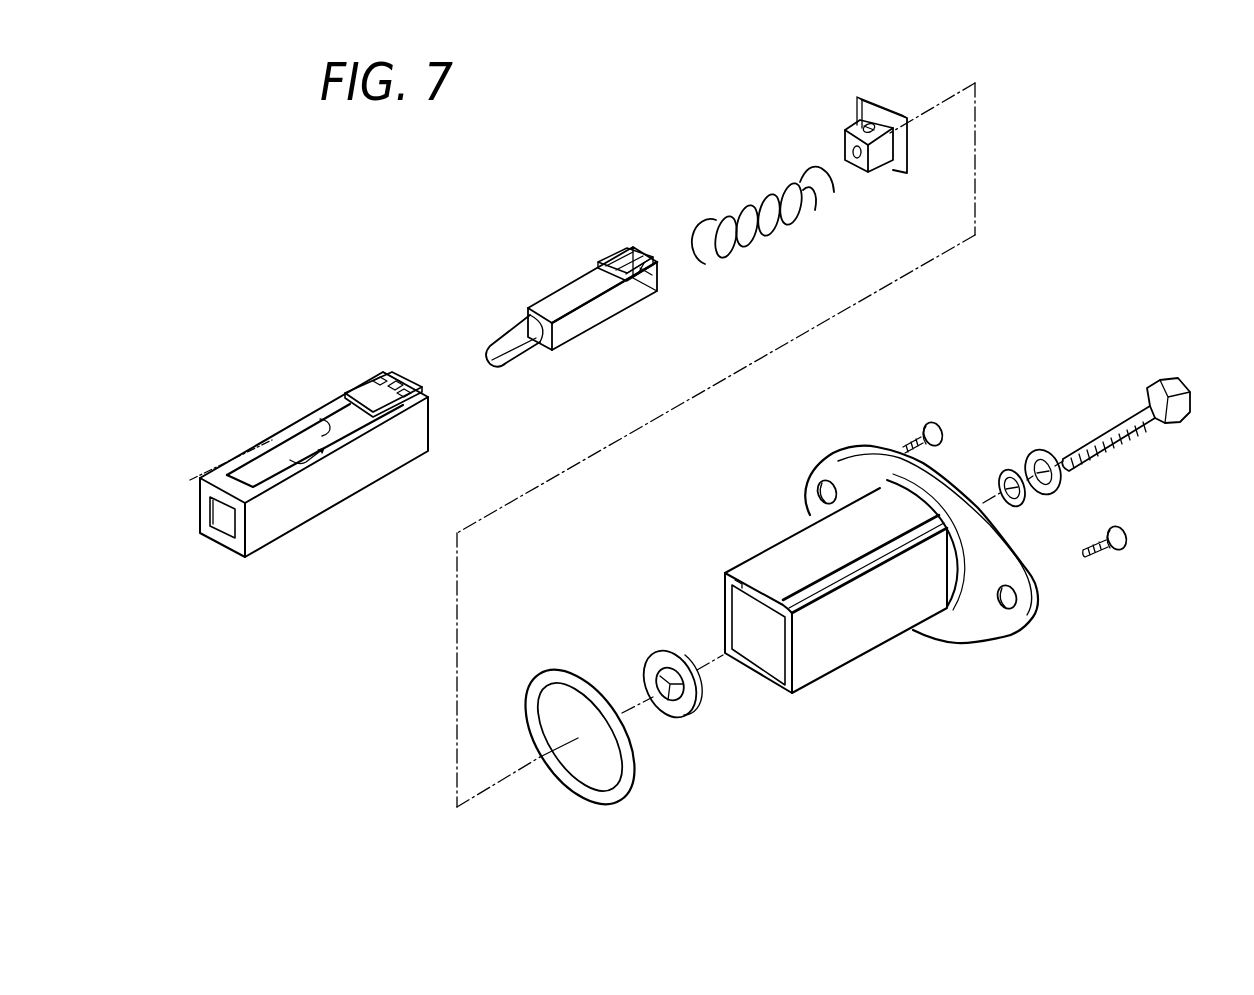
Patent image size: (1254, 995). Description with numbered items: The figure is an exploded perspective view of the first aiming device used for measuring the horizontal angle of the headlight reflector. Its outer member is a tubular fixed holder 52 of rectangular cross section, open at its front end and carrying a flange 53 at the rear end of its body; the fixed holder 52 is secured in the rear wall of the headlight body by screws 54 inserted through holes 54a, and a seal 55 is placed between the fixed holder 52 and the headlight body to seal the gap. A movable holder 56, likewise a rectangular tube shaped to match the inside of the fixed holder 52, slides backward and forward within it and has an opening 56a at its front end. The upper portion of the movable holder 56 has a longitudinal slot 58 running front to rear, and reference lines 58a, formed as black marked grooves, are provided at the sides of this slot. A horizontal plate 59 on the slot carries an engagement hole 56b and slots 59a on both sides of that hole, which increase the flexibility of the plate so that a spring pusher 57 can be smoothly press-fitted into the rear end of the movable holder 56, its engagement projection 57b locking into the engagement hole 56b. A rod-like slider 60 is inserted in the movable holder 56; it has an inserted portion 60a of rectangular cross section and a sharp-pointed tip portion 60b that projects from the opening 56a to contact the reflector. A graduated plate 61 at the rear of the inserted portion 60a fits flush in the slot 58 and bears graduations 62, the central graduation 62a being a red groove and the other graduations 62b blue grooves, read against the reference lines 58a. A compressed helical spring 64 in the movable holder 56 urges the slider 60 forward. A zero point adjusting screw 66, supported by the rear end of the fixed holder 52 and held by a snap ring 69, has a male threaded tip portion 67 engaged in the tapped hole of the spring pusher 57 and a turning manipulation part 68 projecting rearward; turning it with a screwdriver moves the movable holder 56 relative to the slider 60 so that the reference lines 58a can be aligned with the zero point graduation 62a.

The fixed holder 52 is at (838, 672).
The flange 53 is at (985, 634).
The screws 54 is at (940, 425).
The holes 54a is at (820, 482).
The seal 55 is at (618, 797).
The movable holder 56 is at (286, 410).
The opening 56a is at (206, 507).
The engagement hole 56b is at (396, 383).
The spring pusher 57 is at (890, 108).
The engagement projection 57b is at (858, 125).
The longitudinal slot 58 is at (323, 418).
The reference lines 58a is at (282, 443).
The horizontal plate 59 is at (355, 388).
The slots 59a is at (380, 379).
The slider 60 is at (590, 197).
The inserted portion 60a is at (581, 274).
The sharp-pointed tip portion 60b is at (510, 330).
The graduated plate 61 is at (640, 272).
The graduations 62 is at (595, 100).
The central graduation 62a is at (636, 256).
The other graduations 62b is at (620, 262).
The compressed helical spring 64 is at (775, 195).
The zero point adjusting screw 66 is at (1115, 402).
The male threaded tip portion 67 is at (1122, 436).
The turning manipulation part 68 is at (1175, 390).
The snap ring 69 is at (688, 720).